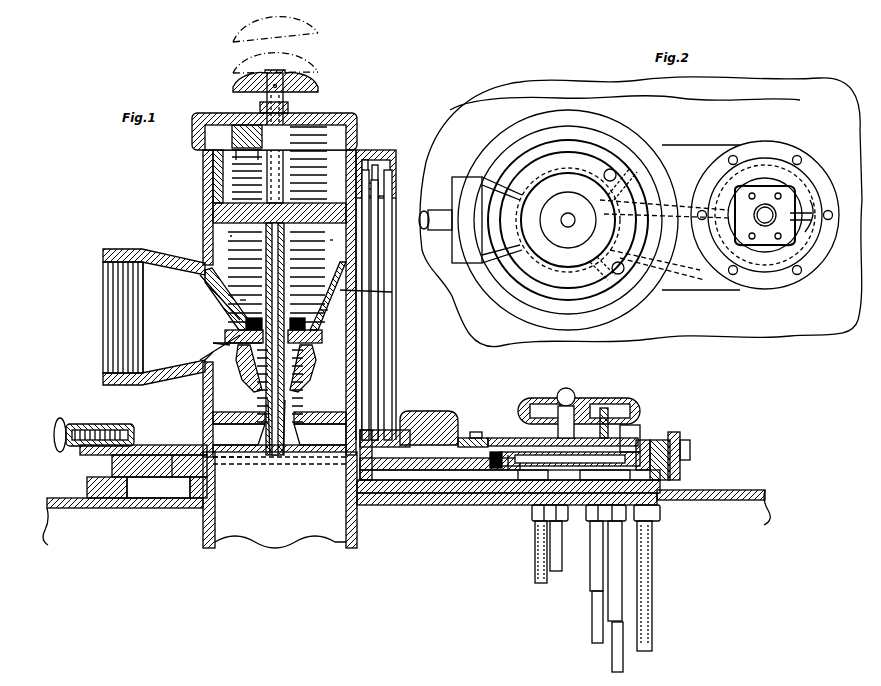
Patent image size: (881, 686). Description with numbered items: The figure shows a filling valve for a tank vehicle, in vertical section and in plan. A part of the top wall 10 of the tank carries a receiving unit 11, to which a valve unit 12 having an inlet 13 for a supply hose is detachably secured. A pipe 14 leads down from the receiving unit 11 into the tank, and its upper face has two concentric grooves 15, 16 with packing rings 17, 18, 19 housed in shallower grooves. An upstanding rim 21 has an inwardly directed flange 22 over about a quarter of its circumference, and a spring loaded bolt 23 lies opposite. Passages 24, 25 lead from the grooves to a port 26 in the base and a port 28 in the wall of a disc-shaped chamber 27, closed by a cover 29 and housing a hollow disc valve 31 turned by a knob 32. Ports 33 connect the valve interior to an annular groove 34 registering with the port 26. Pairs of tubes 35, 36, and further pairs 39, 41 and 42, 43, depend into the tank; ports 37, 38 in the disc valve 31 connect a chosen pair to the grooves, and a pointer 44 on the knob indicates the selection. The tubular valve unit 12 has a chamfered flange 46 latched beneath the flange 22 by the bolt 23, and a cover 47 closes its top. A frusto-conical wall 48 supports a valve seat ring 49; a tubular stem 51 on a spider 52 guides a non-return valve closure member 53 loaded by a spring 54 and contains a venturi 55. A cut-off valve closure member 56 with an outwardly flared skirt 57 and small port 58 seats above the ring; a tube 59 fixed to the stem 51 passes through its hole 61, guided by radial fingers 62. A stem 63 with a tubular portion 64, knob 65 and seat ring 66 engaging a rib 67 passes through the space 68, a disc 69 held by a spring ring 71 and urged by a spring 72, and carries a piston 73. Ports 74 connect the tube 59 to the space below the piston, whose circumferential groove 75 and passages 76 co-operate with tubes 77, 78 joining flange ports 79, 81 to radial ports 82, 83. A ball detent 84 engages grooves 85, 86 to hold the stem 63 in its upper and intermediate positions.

The top wall of tank 10 is at (756, 491).
The receiving unit 11 is at (478, 432).
The valve unit 12 is at (200, 216).
The inlet 13 is at (132, 249).
The pipe 14 is at (357, 535).
The groove 15 is at (192, 490).
The groove 16 is at (172, 488).
The packing ring 17 is at (215, 462).
The packing ring 18 is at (186, 455).
The packing ring 19 is at (165, 445).
The upstanding rim 21 is at (463, 438).
The inwardly directed flange 22 is at (437, 407).
The spring loaded bolt 23 is at (112, 424).
The passage 24 is at (430, 470).
The passage 25 is at (448, 493).
The port 26 is at (478, 480).
The disc-shaped chamber 27 is at (680, 438).
The port 28 is at (505, 452).
The cover 29 is at (510, 438).
The hollow disc valve 31 is at (645, 440).
The knob 32 is at (575, 405).
The ports 33 is at (510, 472).
The annular groove 34 is at (496, 470).
The tube 35 is at (612, 648).
The tube 36 is at (654, 612).
The port 37 is at (606, 430).
The port 38 is at (660, 440).
The tube 39 is at (592, 608).
The tube 41 is at (608, 582).
The tube 42 is at (535, 568).
The tube 43 is at (562, 540).
The pointer 44 is at (636, 438).
The flange 46 is at (400, 430).
The cover 47 is at (348, 114).
The frusto-conical wall 48 is at (216, 355).
The valve seat ring 49 is at (228, 346).
The stem 51 is at (303, 403).
The spider 52 is at (330, 452).
The non-return valve closure member 53 is at (240, 370).
The spring 54 is at (258, 396).
The venturi 55 is at (305, 380).
The cut-off valve closure member 56 is at (384, 314).
The outwardly flared skirt 57 is at (310, 310).
The small port 58 is at (335, 275).
The tube 59 is at (240, 305).
The hole 61 is at (245, 340).
The radial fingers 62 is at (318, 335).
The stem 63 is at (318, 250).
The tubular portion 64 is at (258, 245).
The knob 65 is at (318, 38).
The seat ring 66 is at (246, 323).
The rib 67 is at (262, 150).
The space 68 is at (369, 266).
The disc 69 is at (378, 213).
The spring ring 71 is at (368, 205).
The spring 72 is at (240, 295).
The piston 73 is at (213, 185).
The ports 74 is at (256, 238).
The circumferential groove 75 is at (362, 170).
The passages 76 is at (300, 235).
The tube 77 is at (378, 289).
The tube 78 is at (392, 307).
The port 79 is at (344, 465).
The port 81 is at (375, 480).
The radial port 82 is at (378, 186).
The radial port 83 is at (378, 165).
The spring-loaded ball detent 84 is at (260, 110).
The groove 85 is at (258, 162).
The groove 86 is at (236, 156).